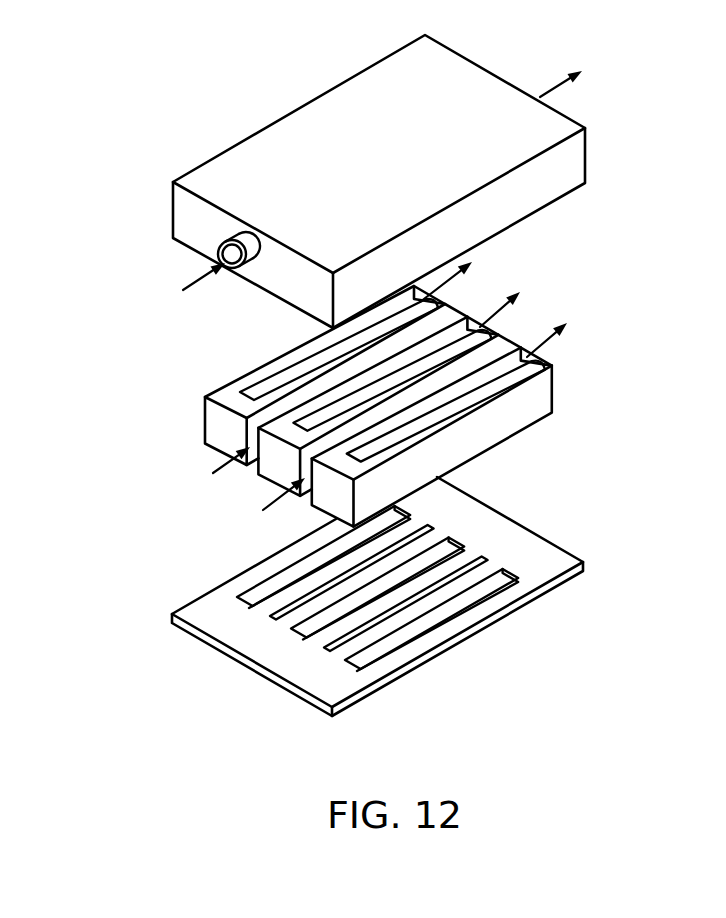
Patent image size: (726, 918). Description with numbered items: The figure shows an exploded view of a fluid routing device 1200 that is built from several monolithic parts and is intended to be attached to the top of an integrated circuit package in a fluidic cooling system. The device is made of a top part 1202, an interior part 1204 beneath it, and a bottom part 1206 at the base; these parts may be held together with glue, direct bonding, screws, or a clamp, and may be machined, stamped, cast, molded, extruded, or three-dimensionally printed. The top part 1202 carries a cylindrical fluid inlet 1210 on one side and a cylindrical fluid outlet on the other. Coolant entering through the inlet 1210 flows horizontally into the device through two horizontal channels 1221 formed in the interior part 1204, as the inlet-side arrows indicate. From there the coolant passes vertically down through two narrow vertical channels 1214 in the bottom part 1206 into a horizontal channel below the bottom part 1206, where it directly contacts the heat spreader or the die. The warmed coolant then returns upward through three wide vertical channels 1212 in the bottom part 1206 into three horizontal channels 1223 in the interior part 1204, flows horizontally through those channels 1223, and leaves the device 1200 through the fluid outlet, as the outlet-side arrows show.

The fluid routing device 1200 is at (102, 62).
The top part 1202 is at (260, 128).
The cylindrical fluid inlet 1210 is at (249, 243).
The interior part 1204 is at (517, 430).
The horizontal channels 1221 is at (250, 436).
The horizontal channels 1223 is at (477, 328).
The bottom part 1206 is at (547, 592).
The wide vertical channels 1212 is at (255, 592).
The narrow vertical channels 1214 is at (288, 615).